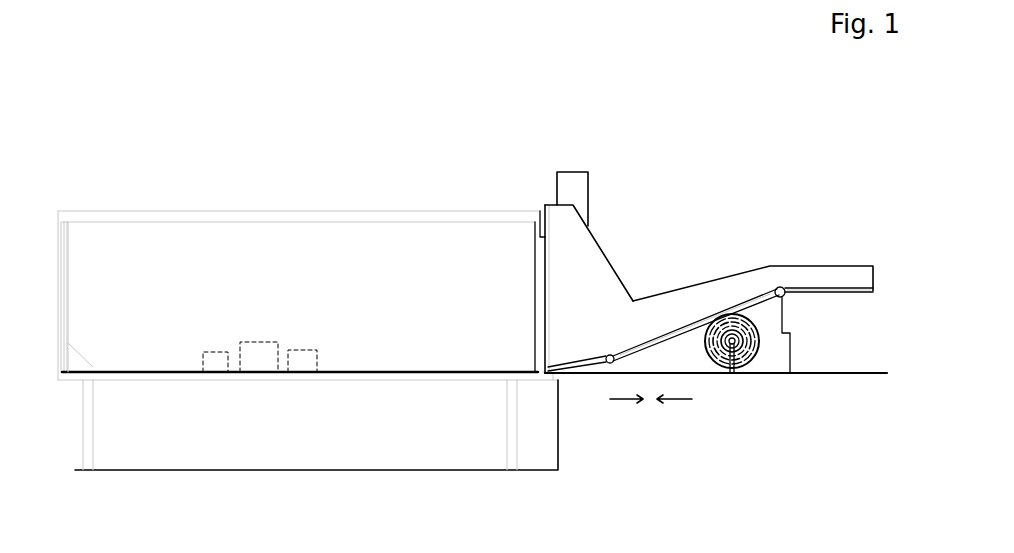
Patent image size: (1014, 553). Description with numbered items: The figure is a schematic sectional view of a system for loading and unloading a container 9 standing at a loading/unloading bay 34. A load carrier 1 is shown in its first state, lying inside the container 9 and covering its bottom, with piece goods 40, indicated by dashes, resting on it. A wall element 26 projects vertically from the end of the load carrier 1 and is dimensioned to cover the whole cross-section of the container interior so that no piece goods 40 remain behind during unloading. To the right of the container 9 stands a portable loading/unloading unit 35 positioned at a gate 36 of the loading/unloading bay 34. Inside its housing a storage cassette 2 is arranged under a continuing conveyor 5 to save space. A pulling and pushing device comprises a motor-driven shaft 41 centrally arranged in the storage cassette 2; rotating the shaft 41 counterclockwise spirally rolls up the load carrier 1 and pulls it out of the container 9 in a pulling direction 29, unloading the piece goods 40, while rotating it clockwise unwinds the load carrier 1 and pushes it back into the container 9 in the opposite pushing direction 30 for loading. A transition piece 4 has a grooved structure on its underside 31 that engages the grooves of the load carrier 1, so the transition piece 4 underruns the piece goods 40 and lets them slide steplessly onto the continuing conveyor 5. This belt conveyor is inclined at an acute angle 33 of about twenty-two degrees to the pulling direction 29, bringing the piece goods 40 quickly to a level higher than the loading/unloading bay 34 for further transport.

The load carrier 1 is at (352, 370).
The storage cassette 2 is at (783, 288).
The transition piece 4 is at (549, 370).
The continuing conveyor 5 is at (613, 356).
The container 9 is at (83, 218).
The wall element 26 is at (68, 317).
The pulling direction 29 is at (631, 402).
The pushing direction 30 is at (673, 402).
The underside 31 is at (586, 377).
The acute angle 33 is at (660, 346).
The loading/unloading bay 34 is at (810, 373).
The loading/unloading unit 35 is at (745, 283).
The gate 36 is at (588, 198).
The piece goods 40 is at (203, 352).
The shaft 41 is at (800, 288).